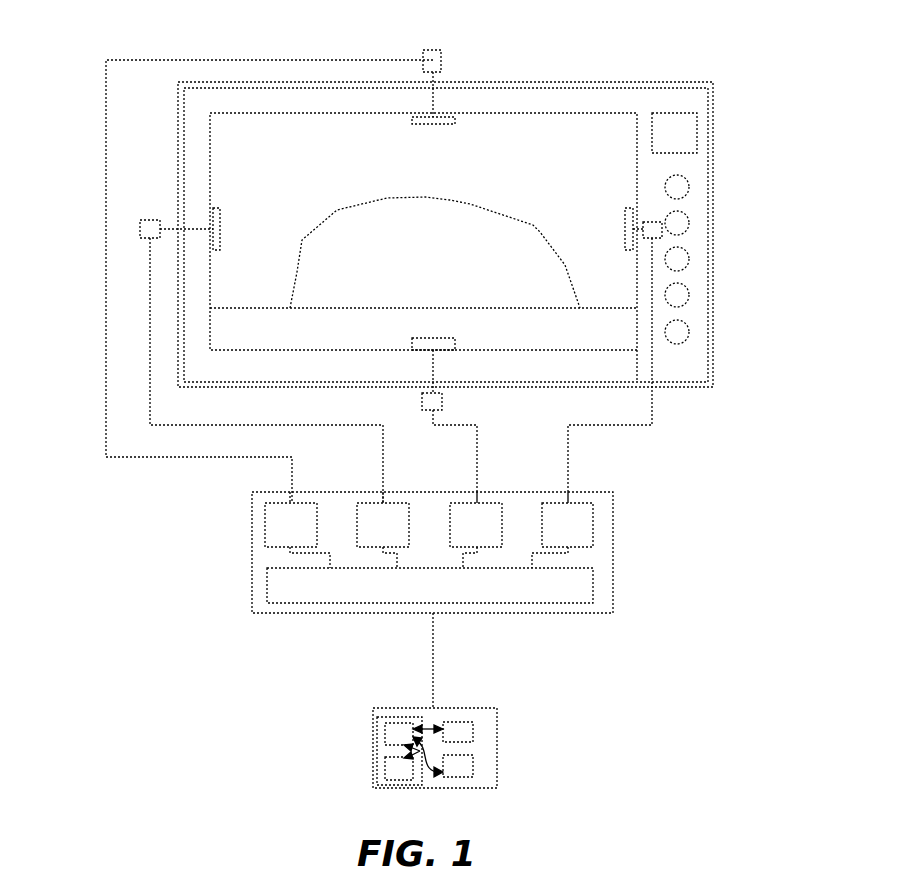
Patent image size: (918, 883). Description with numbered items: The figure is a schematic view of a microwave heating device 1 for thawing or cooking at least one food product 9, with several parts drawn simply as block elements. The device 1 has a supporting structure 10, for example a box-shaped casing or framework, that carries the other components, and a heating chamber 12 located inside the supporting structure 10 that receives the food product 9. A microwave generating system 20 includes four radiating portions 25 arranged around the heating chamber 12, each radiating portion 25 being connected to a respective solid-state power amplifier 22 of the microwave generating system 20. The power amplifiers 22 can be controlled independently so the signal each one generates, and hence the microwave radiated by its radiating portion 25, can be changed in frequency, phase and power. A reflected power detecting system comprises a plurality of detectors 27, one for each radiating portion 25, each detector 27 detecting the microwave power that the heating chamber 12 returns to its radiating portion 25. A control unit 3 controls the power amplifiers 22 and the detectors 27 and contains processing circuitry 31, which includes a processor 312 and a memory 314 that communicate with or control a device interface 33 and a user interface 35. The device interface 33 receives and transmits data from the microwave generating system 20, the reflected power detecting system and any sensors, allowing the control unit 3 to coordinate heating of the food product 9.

The microwave heating device 1 is at (740, 68).
The supporting structure 10 is at (568, 85).
The heating chamber 12 is at (293, 176).
The food product 9 is at (298, 272).
The radiating portion 25 is at (420, 122).
The detector 27 is at (436, 63).
The microwave generating system 20 is at (613, 543).
The solid-state power amplifier 22 is at (558, 535).
The control unit 3 is at (493, 750).
The processing circuitry 31 is at (374, 762).
The processor 312 is at (392, 739).
The memory 314 is at (400, 766).
The device interface 33 is at (458, 732).
The user interface 35 is at (460, 768).